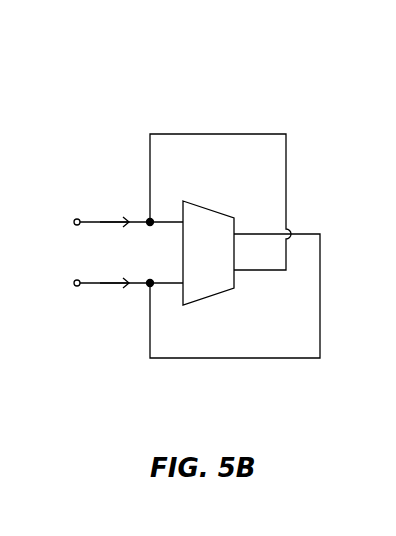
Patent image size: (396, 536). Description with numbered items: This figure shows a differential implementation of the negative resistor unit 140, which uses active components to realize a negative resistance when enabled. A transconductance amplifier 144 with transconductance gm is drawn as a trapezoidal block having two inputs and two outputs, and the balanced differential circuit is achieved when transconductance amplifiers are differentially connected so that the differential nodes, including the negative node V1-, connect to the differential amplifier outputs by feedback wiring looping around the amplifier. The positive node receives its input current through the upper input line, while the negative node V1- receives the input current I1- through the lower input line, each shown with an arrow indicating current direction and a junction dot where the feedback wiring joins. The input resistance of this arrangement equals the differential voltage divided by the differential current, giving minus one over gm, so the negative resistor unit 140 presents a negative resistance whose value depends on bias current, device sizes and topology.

The negative resistor unit 140 is at (187, 186).
The transconductance amplifier (gm) 144 is at (208, 203).
The negative differential input node V1- is at (105, 284).
The negative input current I1- is at (114, 296).